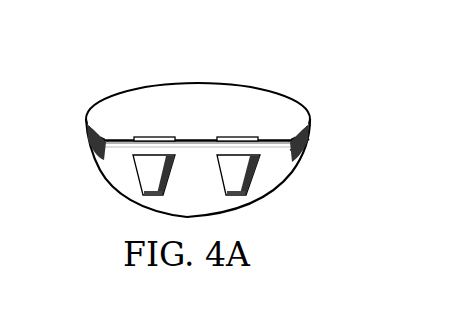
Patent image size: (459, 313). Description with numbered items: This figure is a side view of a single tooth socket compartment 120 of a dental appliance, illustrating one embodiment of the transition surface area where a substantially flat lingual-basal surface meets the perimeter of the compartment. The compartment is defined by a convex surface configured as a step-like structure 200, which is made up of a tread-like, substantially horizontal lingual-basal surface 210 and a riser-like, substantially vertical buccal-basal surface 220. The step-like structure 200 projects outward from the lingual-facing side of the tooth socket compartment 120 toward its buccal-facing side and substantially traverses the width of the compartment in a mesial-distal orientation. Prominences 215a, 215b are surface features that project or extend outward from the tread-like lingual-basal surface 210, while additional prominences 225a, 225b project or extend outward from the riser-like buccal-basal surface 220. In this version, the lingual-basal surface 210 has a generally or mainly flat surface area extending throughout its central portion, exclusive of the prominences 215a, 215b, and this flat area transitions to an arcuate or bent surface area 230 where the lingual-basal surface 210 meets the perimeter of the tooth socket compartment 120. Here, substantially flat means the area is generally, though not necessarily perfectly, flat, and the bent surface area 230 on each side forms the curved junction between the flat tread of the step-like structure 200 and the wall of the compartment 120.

The tooth socket compartment 120 is at (290, 178).
The step-like structure 200 is at (364, 8).
The lingual-basal surface 210 is at (196, 138).
The buccal-basal surface 220 is at (196, 183).
The prominence 215a is at (250, 137).
The prominence 215b is at (142, 137).
The prominence 225a is at (246, 172).
The prominence 225b is at (148, 171).
The arcuate or bent surface area 230 is at (100, 150).